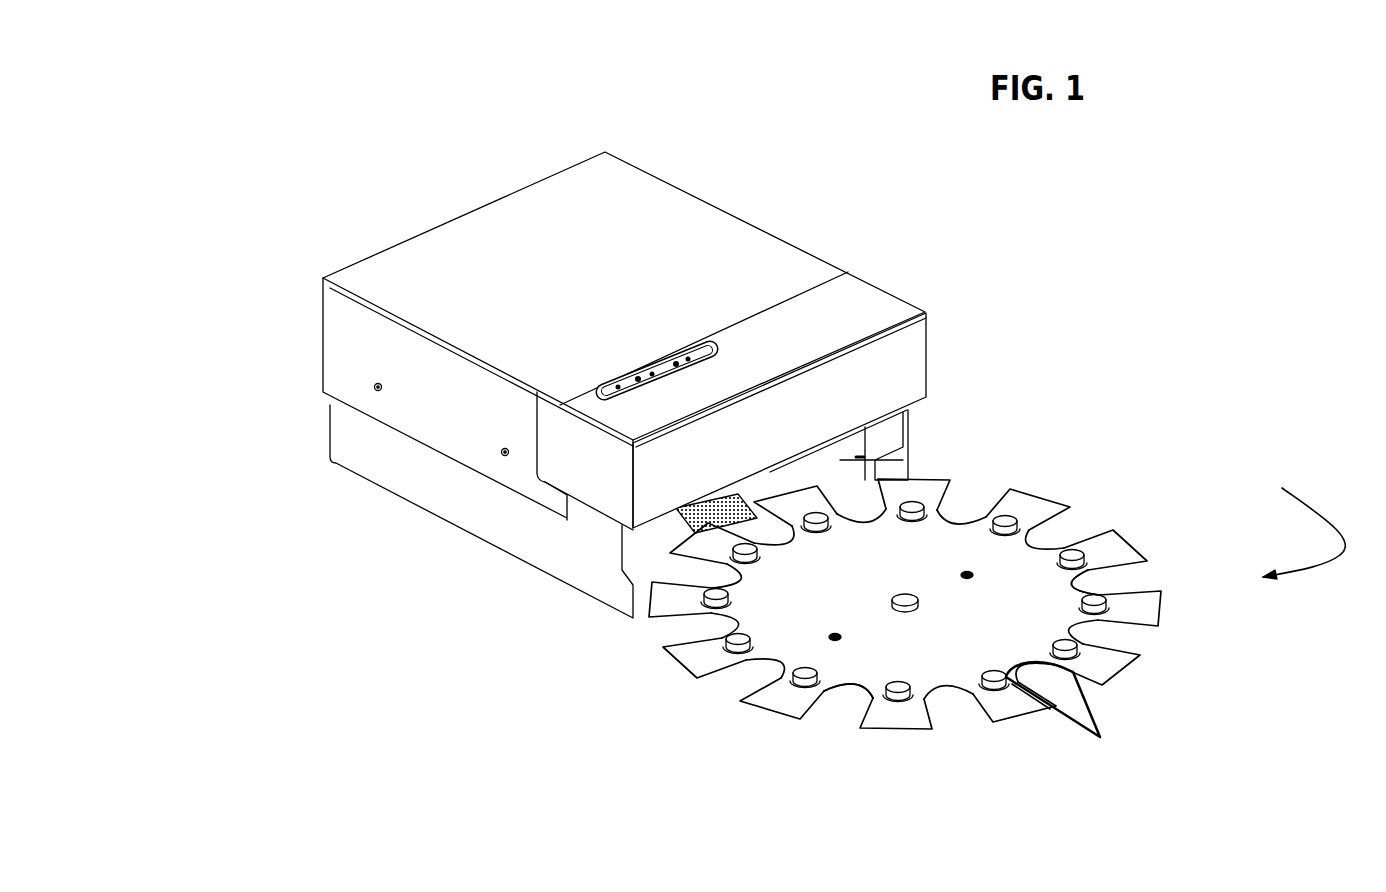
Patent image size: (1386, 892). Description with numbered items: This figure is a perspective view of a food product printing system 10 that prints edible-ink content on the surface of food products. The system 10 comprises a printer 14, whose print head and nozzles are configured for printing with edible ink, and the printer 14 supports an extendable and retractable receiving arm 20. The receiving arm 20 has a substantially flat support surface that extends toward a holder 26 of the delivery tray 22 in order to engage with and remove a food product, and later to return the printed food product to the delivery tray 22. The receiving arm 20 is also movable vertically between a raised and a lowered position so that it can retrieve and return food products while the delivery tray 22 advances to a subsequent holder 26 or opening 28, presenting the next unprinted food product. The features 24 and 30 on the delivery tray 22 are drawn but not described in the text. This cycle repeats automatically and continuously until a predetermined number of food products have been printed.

The printing system 10 is at (273, 240).
The printer 14 is at (955, 330).
The receiving arm 20 is at (681, 531).
The delivery tray 22 is at (1053, 457).
The carousel paddle with cup 24 is at (1118, 552).
The holder 26 is at (1304, 522).
The opening 28 is at (1123, 580).
The indicator flag 30 is at (1068, 706).